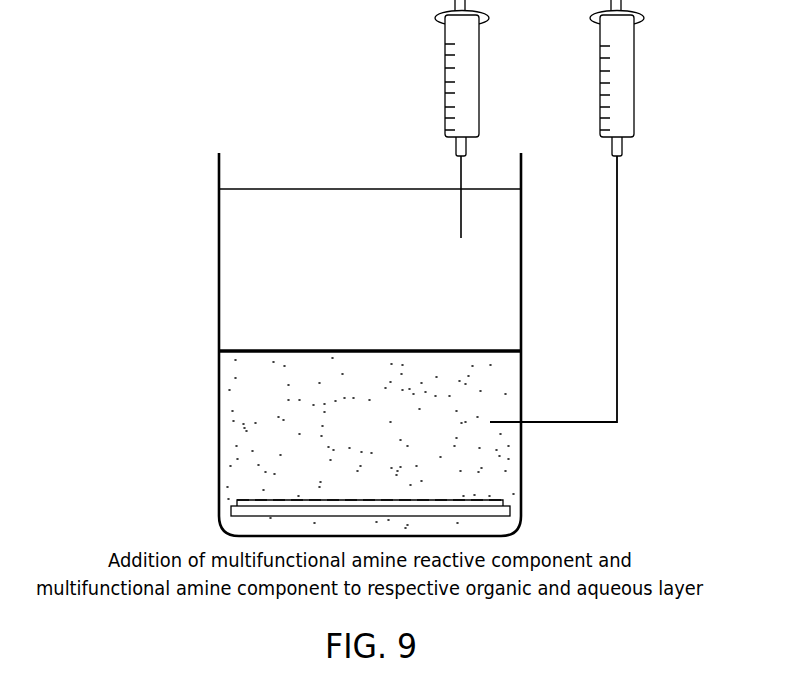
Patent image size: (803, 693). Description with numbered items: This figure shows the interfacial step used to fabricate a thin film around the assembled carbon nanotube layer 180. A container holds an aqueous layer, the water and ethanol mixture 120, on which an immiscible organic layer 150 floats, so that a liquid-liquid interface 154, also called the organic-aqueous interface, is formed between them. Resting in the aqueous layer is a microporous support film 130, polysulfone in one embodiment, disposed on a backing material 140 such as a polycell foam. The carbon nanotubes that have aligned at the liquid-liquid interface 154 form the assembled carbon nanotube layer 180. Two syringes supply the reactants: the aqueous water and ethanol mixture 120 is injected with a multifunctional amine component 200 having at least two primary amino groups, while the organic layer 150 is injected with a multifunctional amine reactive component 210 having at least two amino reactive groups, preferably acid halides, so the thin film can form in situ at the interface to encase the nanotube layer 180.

The water and ethanol mixture 120 is at (238, 460).
The microporous support film 130 is at (466, 500).
The backing material 140 is at (500, 511).
The organic layer 150 is at (240, 218).
The liquid-liquid interface 154 is at (220, 351).
The assembled carbon nanotube layer 180 is at (468, 350).
The multifunctional amine component 200 is at (624, 73).
The multifunctional amine reactive component 210 is at (444, 73).